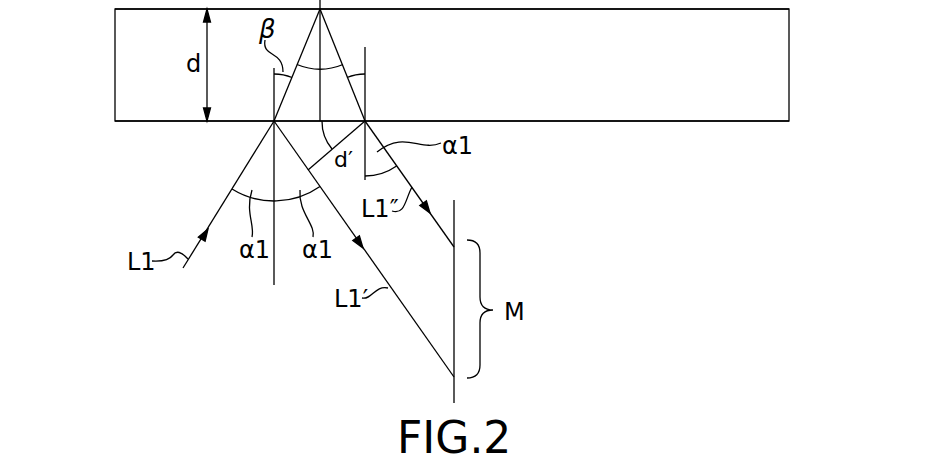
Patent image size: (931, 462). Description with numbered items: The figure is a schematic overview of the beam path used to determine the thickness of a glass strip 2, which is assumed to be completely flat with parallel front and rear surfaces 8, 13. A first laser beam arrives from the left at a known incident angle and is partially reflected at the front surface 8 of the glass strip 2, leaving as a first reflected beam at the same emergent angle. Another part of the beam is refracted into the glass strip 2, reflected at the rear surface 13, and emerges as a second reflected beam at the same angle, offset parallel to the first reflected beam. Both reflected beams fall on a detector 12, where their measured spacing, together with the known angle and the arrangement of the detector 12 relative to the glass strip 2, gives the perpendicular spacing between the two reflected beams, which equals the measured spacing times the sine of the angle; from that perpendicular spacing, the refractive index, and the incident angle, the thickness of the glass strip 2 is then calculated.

The glass strip 2 is at (625, 74).
The rear surface 13 is at (696, 22).
The front surface 8 is at (668, 135).
The detector 12 is at (455, 389).